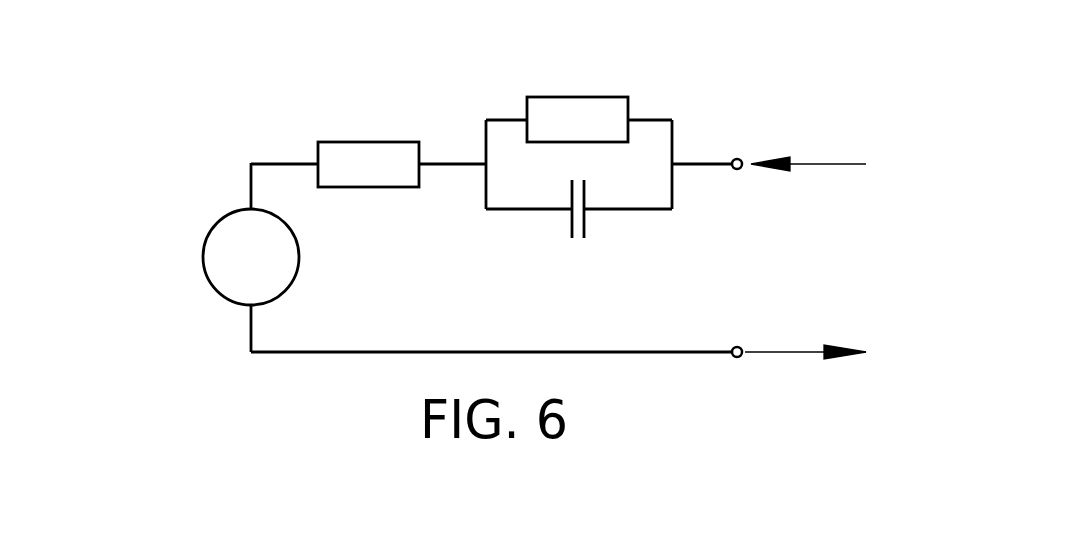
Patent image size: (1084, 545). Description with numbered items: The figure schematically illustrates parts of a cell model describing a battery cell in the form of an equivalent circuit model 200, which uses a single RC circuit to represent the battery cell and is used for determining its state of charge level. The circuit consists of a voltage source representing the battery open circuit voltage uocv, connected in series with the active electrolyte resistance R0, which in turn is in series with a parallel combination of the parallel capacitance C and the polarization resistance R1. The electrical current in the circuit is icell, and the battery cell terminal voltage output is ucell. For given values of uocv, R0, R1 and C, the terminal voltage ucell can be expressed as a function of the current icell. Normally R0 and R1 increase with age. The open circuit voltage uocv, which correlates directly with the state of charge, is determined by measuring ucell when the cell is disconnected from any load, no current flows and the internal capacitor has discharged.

The equivalent circuit model 200 is at (163, 96).
The battery open circuit voltage uocv is at (203, 226).
The active electrolyte resistance R0 is at (365, 142).
The polarization resistance R1 is at (575, 97).
The parallel capacitance C is at (571, 222).
The electrical current in the circuit icell is at (821, 164).
The battery cell terminal voltage output ucell is at (787, 351).